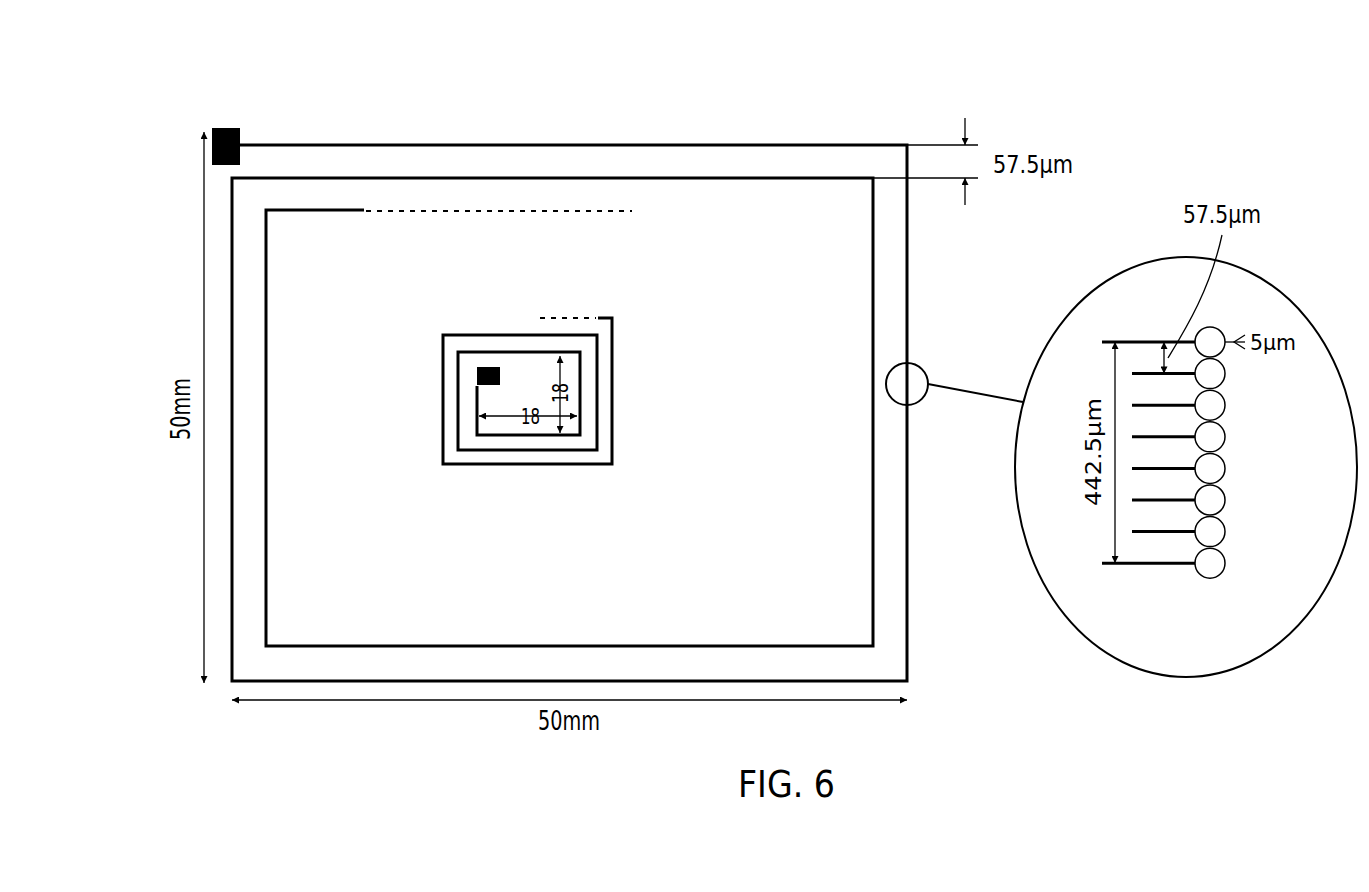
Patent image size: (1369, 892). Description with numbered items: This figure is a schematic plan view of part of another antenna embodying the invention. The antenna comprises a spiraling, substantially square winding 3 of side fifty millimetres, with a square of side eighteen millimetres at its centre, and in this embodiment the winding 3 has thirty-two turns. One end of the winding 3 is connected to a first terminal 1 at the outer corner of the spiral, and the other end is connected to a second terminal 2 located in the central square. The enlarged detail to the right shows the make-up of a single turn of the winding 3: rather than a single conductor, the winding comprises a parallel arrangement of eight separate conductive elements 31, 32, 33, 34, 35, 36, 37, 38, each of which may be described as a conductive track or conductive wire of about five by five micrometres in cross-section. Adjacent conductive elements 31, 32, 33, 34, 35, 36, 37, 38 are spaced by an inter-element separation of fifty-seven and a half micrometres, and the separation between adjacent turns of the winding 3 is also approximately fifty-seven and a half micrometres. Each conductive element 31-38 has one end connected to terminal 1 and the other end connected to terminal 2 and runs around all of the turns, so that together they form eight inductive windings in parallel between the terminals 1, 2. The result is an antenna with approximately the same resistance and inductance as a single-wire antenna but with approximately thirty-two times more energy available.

The terminal 1 is at (228, 128).
The terminal 2 is at (487, 368).
The winding 3 is at (326, 145).
The conductive element 31 is at (1128, 342).
The conductive element 32 is at (1225, 374).
The conductive element 33 is at (1225, 405).
The conductive element 34 is at (1225, 437).
The conductive element 35 is at (1225, 468).
The conductive element 36 is at (1225, 500).
The conductive element 37 is at (1225, 532).
The conductive element 38 is at (1225, 563).